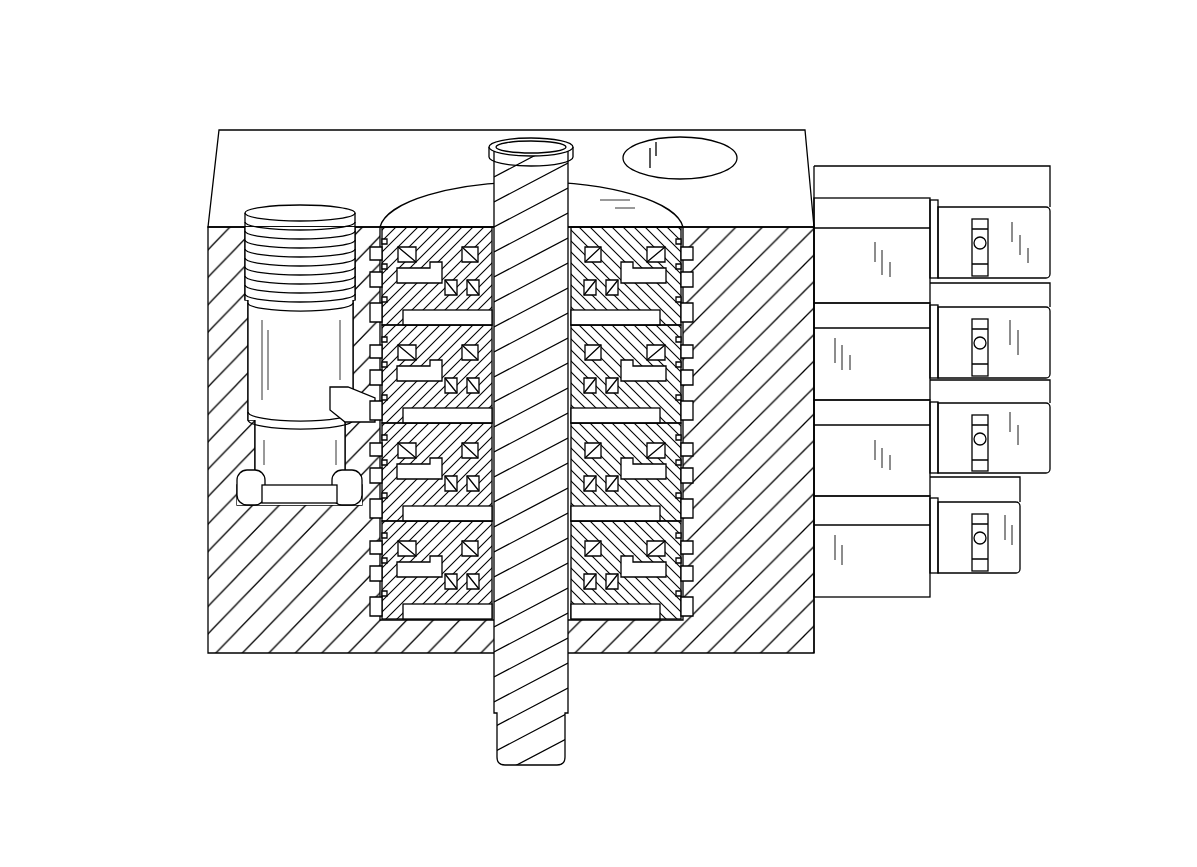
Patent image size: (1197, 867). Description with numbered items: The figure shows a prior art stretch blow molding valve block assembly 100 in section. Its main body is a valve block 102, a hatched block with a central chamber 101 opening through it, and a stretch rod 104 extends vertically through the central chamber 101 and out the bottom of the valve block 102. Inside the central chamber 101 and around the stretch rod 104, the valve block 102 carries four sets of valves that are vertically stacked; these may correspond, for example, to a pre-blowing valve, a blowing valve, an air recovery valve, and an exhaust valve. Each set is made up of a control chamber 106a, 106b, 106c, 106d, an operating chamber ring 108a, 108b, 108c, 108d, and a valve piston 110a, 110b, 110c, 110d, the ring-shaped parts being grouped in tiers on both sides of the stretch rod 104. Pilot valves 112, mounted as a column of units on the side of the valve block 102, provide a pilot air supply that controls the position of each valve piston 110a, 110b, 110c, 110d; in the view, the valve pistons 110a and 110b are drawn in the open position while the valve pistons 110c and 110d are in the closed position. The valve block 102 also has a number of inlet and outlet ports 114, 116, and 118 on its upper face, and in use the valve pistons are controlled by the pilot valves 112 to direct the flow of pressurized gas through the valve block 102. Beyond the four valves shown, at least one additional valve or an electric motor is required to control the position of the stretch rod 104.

The stretch blow molding valve block assembly 100 is at (866, 96).
The central chamber 101 is at (417, 630).
The valve block 102 is at (283, 653).
The stretch rod 104 is at (565, 736).
The control chamber 106a is at (683, 222).
The control chamber 106b is at (683, 352).
The control chamber 106c is at (683, 450).
The control chamber 106d is at (683, 548).
The operating chamber ring 108a is at (682, 313).
The operating chamber ring 108b is at (682, 410).
The operating chamber ring 108c is at (682, 509).
The operating chamber ring 108d is at (682, 606).
The valve piston 110a is at (645, 268).
The valve piston 110b is at (645, 365).
The valve piston 110c is at (645, 463).
The valve piston 110d is at (645, 561).
The pilot valve 112 is at (1052, 174).
The inlet and outlet port 114 is at (312, 208).
The inlet and outlet port 116 is at (738, 158).
The inlet and outlet port 118 is at (489, 151).